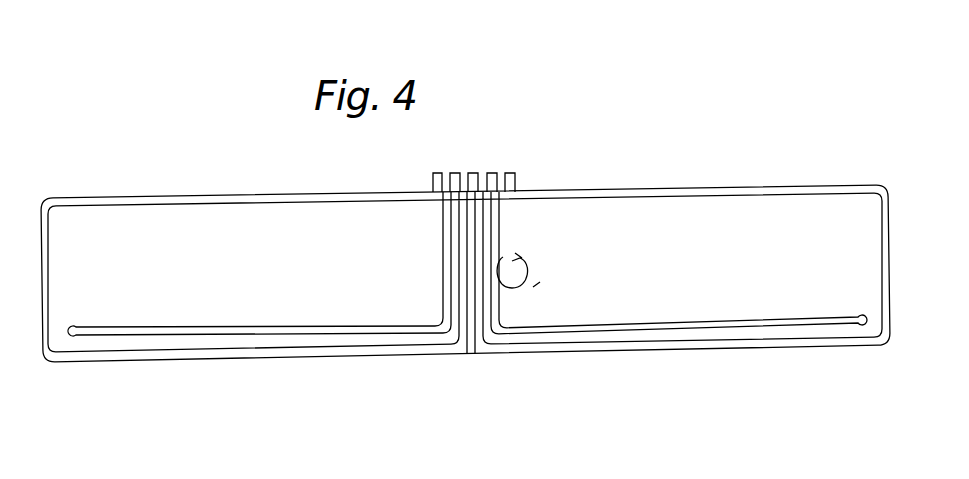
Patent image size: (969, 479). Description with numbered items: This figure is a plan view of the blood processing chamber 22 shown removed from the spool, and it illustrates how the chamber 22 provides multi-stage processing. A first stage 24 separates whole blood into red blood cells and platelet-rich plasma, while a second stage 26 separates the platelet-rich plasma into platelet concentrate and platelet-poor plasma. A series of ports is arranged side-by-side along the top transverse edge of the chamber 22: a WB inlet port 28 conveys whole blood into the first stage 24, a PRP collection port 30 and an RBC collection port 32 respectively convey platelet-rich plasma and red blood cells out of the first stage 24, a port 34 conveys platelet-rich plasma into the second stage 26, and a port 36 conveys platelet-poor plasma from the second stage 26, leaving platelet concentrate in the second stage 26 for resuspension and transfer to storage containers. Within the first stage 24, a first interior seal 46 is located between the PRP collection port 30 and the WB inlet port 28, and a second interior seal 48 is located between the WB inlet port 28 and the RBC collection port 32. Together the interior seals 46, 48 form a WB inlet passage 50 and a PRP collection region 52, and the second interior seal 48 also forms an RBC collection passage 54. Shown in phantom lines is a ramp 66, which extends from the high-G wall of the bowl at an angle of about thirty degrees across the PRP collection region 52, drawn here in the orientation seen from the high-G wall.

The blood processing chamber 22 is at (664, 160).
The first stage 24 is at (792, 202).
The second stage 26 is at (276, 208).
The WB inlet port 28 is at (491, 172).
The PRP collection port 30 is at (512, 178).
The RBC collection port 32 is at (472, 172).
The port 34 is at (433, 180).
The port 36 is at (455, 172).
The first interior seal 46 is at (503, 243).
The second interior seal 48 is at (688, 325).
The WB inlet passage 50 is at (493, 228).
The PRP collection region 52 is at (600, 246).
The RBC collection passage 54 is at (706, 332).
The ramp 66 is at (590, 196).